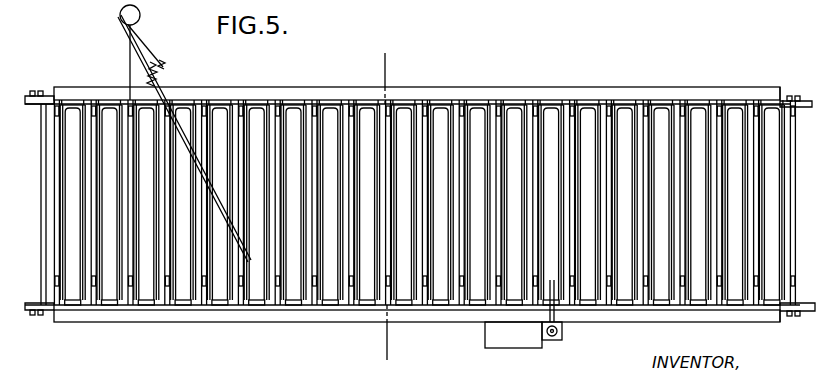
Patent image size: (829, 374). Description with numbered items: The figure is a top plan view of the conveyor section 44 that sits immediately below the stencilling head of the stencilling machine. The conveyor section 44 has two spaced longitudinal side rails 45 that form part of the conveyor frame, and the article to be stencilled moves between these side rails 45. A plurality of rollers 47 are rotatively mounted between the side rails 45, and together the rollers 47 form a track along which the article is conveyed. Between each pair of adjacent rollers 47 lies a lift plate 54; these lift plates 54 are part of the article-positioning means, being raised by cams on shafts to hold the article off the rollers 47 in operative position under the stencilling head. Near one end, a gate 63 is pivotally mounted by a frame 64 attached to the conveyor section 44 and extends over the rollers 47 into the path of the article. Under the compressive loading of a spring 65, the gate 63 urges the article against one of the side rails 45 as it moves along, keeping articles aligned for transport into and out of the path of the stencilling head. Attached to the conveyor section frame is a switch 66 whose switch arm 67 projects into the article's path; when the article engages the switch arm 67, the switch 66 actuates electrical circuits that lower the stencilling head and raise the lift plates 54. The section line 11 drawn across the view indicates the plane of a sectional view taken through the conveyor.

The section line 11- 11 is at (372, 67).
The conveyor section 44 is at (214, 323).
The side rails 45 is at (716, 97).
The rollers 47 is at (627, 118).
The lift plate 54 is at (530, 114).
The gate 63 is at (160, 83).
The frame 64 is at (128, 56).
The spring 65 is at (145, 81).
The switch 66 is at (497, 341).
The switch arm 67 is at (548, 292).